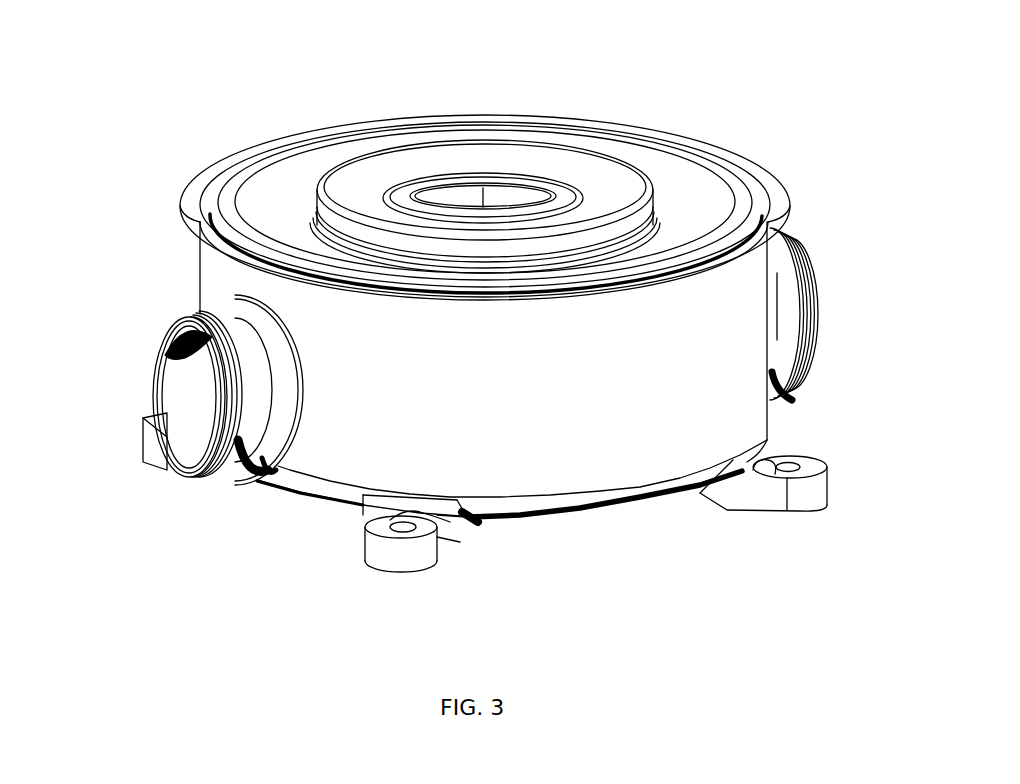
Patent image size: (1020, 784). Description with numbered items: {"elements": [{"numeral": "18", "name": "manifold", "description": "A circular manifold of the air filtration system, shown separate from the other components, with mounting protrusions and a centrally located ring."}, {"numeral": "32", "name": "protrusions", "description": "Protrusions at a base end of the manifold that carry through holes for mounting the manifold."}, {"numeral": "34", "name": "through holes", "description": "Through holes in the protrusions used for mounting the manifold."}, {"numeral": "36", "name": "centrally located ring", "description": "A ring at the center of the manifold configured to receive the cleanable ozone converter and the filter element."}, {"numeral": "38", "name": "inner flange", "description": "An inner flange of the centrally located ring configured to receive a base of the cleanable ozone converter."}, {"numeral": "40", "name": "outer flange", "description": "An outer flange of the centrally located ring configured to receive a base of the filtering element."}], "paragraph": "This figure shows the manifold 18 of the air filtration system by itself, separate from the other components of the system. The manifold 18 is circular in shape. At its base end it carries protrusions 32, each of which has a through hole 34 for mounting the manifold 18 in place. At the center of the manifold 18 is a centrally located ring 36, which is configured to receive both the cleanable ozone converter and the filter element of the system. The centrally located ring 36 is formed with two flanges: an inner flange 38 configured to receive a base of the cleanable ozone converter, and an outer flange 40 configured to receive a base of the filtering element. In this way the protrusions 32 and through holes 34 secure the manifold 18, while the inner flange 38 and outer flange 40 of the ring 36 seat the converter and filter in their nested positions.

The housing 18 is at (180, 84).
The mounting foot 32 is at (797, 510).
The mounting foot 34 is at (410, 528).
The boss top surface 36 is at (583, 158).
The central opening 38 is at (522, 173).
The boss side ring 40 is at (653, 207).